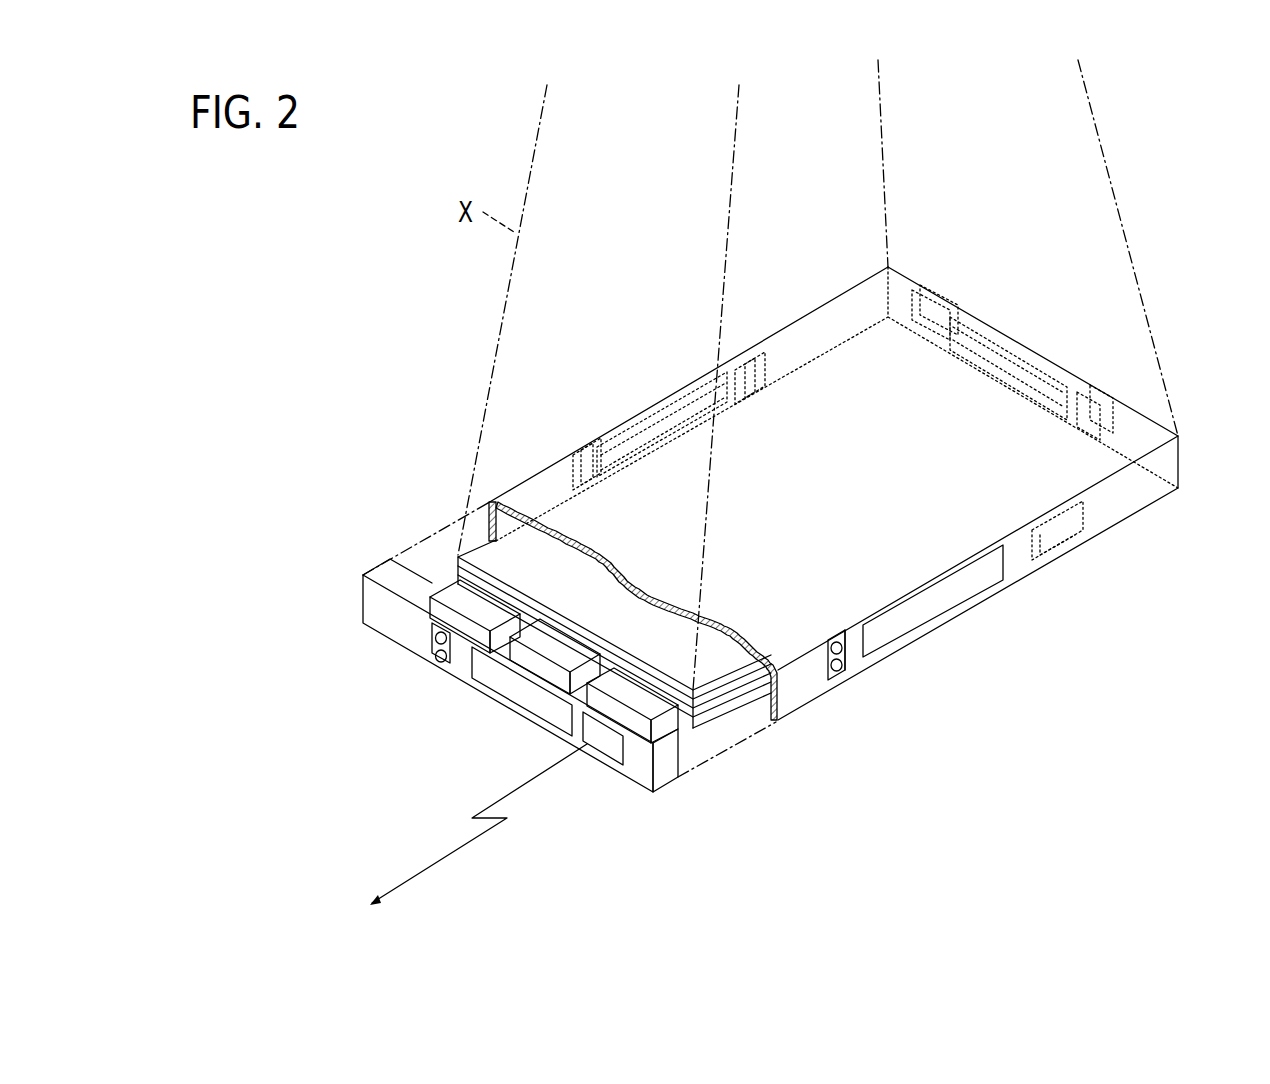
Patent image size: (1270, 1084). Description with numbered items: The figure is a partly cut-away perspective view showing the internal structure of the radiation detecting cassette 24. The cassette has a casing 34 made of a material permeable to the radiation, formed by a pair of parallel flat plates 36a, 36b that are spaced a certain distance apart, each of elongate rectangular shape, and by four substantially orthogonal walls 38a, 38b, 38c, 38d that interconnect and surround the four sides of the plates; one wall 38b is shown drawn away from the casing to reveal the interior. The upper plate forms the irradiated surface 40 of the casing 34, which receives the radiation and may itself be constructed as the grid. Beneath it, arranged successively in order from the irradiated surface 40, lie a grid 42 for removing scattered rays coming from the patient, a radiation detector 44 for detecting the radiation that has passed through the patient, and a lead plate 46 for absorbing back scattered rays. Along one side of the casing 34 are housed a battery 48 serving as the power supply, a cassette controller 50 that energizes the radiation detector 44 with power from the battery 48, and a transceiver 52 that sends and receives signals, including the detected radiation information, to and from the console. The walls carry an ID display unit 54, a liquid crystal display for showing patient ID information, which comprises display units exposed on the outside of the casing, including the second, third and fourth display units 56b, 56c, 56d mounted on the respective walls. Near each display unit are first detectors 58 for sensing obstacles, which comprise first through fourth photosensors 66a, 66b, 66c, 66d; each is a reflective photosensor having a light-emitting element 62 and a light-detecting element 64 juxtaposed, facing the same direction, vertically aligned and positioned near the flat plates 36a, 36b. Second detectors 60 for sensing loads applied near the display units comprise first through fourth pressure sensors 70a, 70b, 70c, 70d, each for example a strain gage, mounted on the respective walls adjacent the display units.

The radiation detecting cassette 24 is at (660, 390).
The casing 34 is at (1106, 536).
The flat plate 36a is at (950, 405).
The flat plate 36b is at (1018, 585).
The wall 38a is at (802, 686).
The wall 38b is at (375, 607).
The wall 38c is at (393, 533).
The wall 38d is at (1180, 460).
The irradiated surface 40 is at (824, 308).
The grid 42 is at (650, 607).
The radiation detector 44 is at (723, 712).
The lead plate 46 is at (739, 706).
The battery 48 is at (484, 608).
The cassette controller 50 is at (556, 652).
The transceiver 52 is at (629, 697).
The ID display unit 54 is at (956, 572).
The second display unit 56b is at (497, 680).
The third display unit 56c is at (670, 387).
The fourth display unit 56d is at (1042, 353).
The first detector 58 is at (840, 626).
The second detector 60 is at (615, 782).
The light-emitting element 62 is at (831, 643).
The light-detecting element 64 is at (843, 679).
The first photosensor 66a is at (845, 659).
The second photosensor 66b is at (428, 640).
The third photosensor 66c is at (765, 352).
The fourth photosensor 66d is at (1118, 405).
The first pressure sensor 70a is at (1072, 556).
The second pressure sensor 70b is at (597, 745).
The third pressure sensor 70c is at (533, 468).
The fourth pressure sensor 70d is at (957, 305).